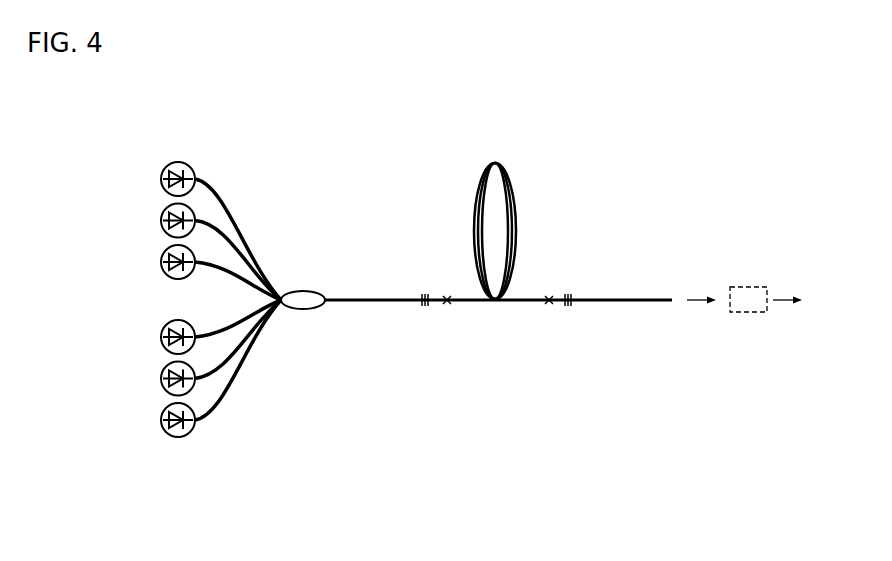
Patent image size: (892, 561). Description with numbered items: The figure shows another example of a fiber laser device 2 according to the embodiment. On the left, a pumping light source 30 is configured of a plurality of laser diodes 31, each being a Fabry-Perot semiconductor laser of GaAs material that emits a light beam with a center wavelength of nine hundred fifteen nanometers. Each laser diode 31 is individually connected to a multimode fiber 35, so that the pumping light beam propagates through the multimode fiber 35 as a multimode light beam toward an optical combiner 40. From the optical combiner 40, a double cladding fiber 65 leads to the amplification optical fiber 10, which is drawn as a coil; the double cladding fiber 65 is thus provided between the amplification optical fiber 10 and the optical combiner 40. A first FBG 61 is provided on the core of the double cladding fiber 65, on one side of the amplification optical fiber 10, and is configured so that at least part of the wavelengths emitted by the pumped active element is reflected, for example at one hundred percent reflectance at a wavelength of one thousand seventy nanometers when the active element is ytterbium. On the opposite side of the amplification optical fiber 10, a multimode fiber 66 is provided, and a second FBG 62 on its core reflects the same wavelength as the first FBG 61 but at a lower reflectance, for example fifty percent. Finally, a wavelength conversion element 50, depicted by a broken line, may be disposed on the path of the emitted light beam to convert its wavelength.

The fiber laser device 2 is at (660, 145).
The amplification optical fiber 10 is at (515, 298).
The pumping light source 30 is at (155, 143).
The laser diode 31 is at (161, 177).
The multimode fiber 35 is at (218, 272).
The optical combiner 40 is at (310, 302).
The wavelength conversion element 50 is at (757, 288).
The first FBG 61 is at (425, 307).
The second FBG 62 is at (568, 307).
The double cladding fiber 65 is at (357, 300).
The multimode fiber 66 is at (633, 300).